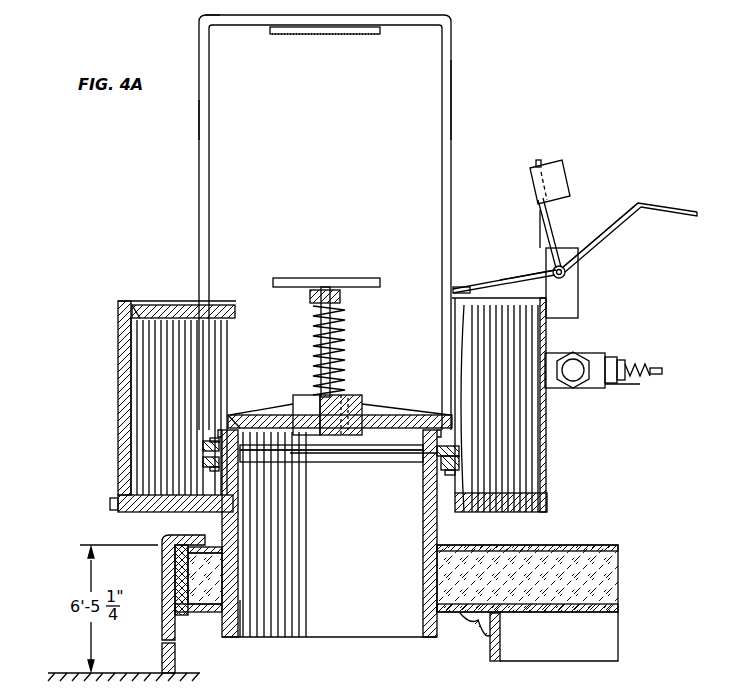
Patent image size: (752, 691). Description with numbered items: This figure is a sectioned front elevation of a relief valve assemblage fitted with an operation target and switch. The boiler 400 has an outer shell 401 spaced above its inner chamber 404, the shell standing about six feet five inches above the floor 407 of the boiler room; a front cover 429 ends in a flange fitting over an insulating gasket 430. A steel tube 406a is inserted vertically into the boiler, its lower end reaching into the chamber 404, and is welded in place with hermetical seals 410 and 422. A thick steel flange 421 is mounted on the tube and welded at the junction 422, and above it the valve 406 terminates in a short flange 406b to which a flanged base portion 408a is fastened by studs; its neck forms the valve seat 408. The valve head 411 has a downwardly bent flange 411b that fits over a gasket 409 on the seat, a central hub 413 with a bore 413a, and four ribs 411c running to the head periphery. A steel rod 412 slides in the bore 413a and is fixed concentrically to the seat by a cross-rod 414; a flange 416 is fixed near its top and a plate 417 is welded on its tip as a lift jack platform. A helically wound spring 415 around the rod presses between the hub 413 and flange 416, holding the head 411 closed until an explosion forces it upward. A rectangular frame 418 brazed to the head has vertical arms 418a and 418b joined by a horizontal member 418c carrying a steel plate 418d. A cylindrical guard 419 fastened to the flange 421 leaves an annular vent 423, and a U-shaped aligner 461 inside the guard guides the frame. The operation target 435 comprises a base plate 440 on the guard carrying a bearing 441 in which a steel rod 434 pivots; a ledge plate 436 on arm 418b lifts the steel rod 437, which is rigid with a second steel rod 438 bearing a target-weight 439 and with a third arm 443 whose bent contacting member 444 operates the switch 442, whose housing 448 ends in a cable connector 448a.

The boiler 400 is at (685, 602).
The outer shell 401 is at (590, 548).
The inner chamber 404 is at (372, 637).
The valve 406 is at (455, 88).
The steel tube 406a is at (440, 530).
The short flange 406b is at (203, 462).
The floor 407 is at (56, 672).
The valve seat 408 is at (402, 460).
The flanged base portion 408a is at (203, 450).
The gasket 409 is at (460, 453).
The hermetical seal 410 is at (226, 640).
The valve head 411 is at (394, 416).
The downwardly bent flange 411b is at (232, 413).
The ribs 411c is at (296, 397).
The steel rod 412 is at (346, 350).
The hub 413 is at (364, 412).
The bore 413a is at (350, 398).
The cross-rod 414 is at (352, 462).
The helically wound spring 415 is at (345, 321).
The flange 416 is at (342, 296).
The plate 417 is at (326, 278).
The rectangular frame 418 is at (412, 10).
The vertical steel arm 418a is at (205, 117).
The vertical steel arm 418b is at (448, 125).
The horizontal member 418c is at (222, 14).
The steel plate 418d is at (335, 35).
The cylindrical guard 419 is at (120, 398).
The flange 421 is at (168, 505).
The hermetical seal 422 is at (222, 513).
The annular vent 423 is at (158, 354).
The front cover 429 is at (164, 568).
The insulating gasket 430 is at (175, 638).
The steel rod 434 is at (566, 272).
The operation target 435 is at (585, 210).
The ledge plate 436 is at (488, 292).
The steel rod 437 is at (520, 284).
The second steel rod 438 is at (548, 224).
The target-weight 439 is at (555, 172).
The base plate 440 is at (540, 248).
The bearing 441 is at (578, 298).
The switch 442 is at (624, 392).
The third arm 443 is at (600, 238).
The contacting member 444 is at (650, 206).
The housing 448 is at (586, 356).
The cable connector 448a is at (578, 372).
The U-shaped aligner 461 is at (164, 303).